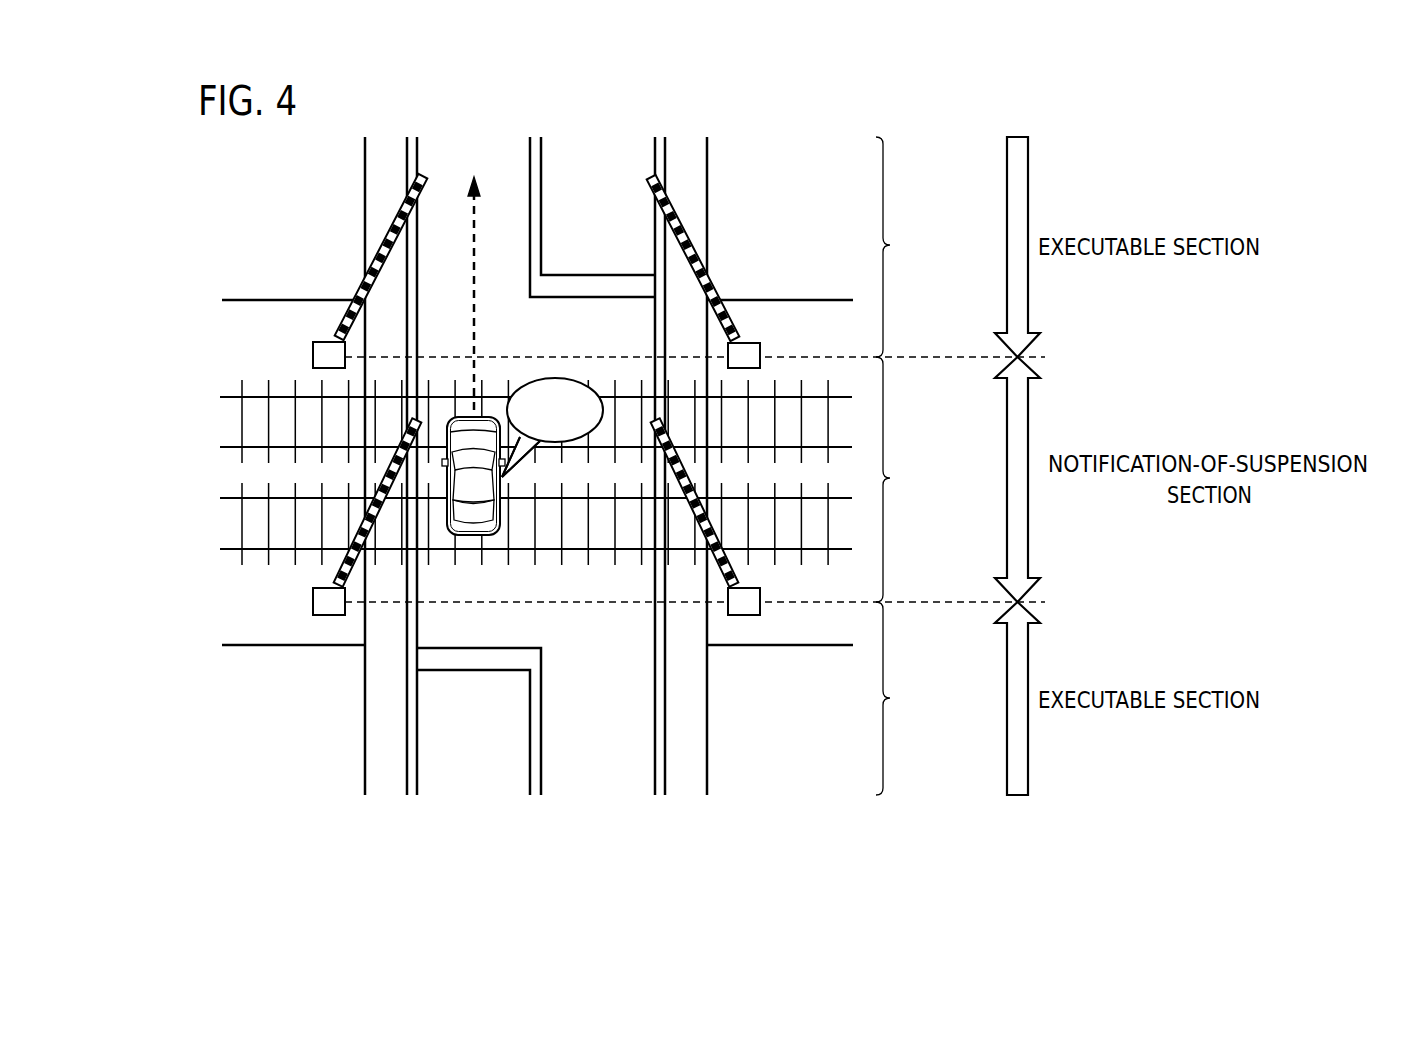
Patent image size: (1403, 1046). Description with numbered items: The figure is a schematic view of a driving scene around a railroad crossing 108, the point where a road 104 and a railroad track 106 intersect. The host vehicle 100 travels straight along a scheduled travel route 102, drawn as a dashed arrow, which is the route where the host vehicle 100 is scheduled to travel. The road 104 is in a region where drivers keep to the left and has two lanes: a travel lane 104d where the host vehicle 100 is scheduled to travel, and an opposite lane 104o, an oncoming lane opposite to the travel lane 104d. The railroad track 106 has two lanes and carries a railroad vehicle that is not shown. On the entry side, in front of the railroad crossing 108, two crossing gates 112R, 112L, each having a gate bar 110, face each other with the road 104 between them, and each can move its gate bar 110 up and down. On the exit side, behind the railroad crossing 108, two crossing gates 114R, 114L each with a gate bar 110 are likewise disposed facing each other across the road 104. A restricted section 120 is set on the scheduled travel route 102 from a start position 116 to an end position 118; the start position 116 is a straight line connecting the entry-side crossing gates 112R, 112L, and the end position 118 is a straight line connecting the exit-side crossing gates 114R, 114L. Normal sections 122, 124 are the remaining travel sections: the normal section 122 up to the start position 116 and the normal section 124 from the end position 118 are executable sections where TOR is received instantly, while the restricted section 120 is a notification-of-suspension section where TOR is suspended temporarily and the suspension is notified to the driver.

The host vehicle 100 is at (485, 537).
The scheduled travel route 102 is at (480, 229).
The road 104 is at (622, 92).
The travel lane 104d is at (497, 162).
The opposite lane 104o is at (590, 153).
The railroad track 106 is at (197, 380).
The railroad crossing 108 is at (330, 280).
The gate bar 110 is at (383, 234).
The crossing gate 112L is at (318, 608).
The crossing gate 112R is at (756, 610).
The crossing gate 114L is at (313, 346).
The crossing gate 114R is at (762, 345).
The start position 116 is at (596, 605).
The end position 118 is at (535, 353).
The restricted section 120 is at (908, 479).
The normal section 122 is at (907, 698).
The normal section 124 is at (907, 247).